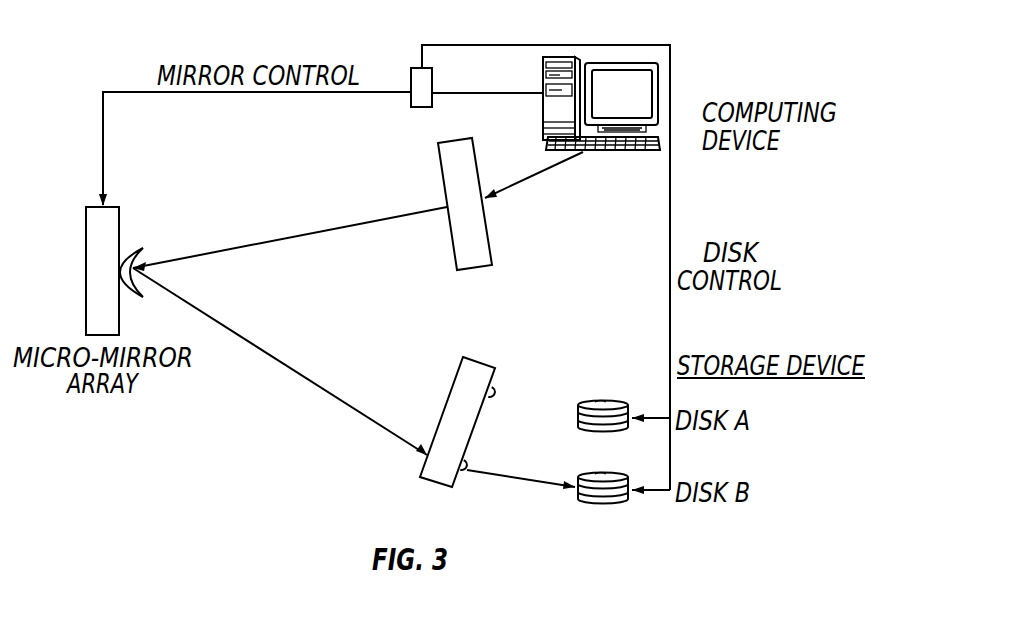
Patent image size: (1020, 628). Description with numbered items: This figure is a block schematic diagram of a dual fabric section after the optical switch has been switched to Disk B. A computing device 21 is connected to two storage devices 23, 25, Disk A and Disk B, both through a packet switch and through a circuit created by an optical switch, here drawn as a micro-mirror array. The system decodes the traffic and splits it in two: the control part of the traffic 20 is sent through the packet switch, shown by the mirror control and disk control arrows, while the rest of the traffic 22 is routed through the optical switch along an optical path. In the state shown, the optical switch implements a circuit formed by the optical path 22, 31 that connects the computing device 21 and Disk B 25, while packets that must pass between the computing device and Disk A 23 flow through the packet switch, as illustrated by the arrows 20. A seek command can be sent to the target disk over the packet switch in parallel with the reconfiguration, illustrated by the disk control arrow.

The control part of the traffic 20 is at (130, 91).
The computing device 21 is at (660, 97).
The rest of the traffic 22 is at (329, 227).
The storage device 23 is at (601, 430).
The storage device 25 is at (601, 501).
The optical path 31 is at (522, 486).